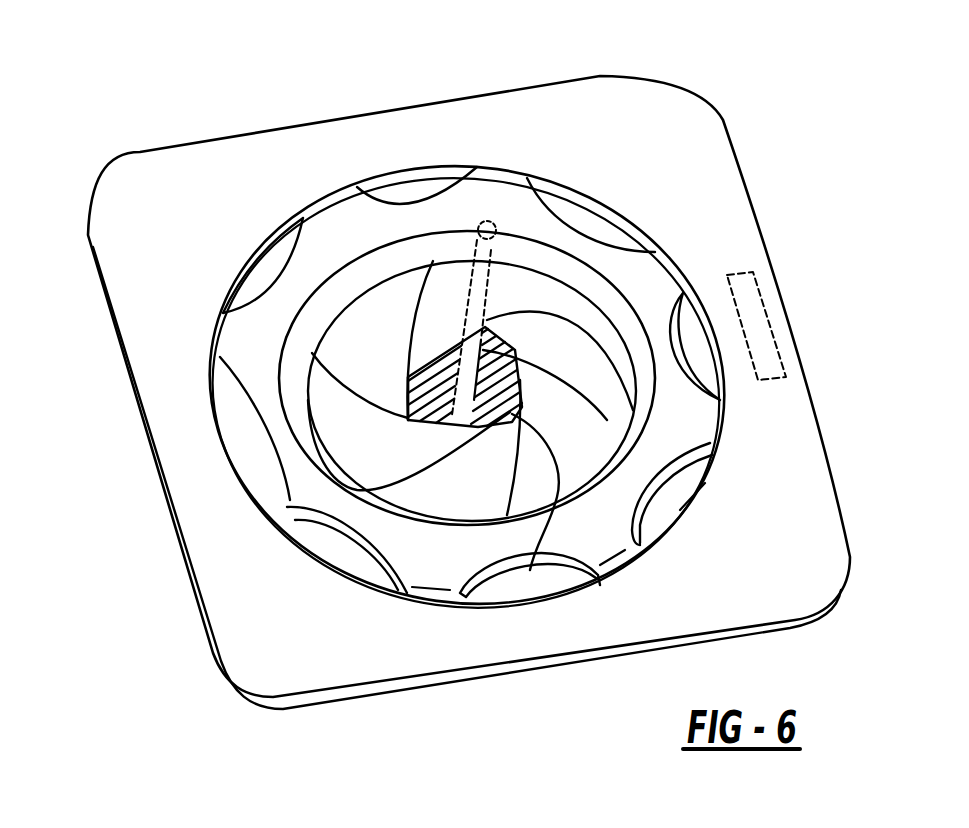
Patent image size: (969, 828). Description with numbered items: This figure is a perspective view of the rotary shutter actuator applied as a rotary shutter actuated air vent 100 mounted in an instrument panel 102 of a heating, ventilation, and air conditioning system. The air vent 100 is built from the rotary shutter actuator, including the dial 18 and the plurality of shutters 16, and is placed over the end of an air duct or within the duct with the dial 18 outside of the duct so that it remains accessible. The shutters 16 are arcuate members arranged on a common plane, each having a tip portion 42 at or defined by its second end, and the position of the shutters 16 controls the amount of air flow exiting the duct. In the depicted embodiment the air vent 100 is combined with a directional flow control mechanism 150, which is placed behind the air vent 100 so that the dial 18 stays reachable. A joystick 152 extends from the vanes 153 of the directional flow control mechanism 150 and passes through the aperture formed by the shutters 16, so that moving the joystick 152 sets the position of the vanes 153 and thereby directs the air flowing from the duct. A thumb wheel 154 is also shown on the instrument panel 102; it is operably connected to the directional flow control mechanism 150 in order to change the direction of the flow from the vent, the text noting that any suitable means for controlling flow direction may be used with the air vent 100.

The rotary shutter actuated air vent 100 is at (431, 70).
The instrument panel 102 is at (183, 178).
The dial 18 is at (287, 482).
The shutters 16 is at (580, 346).
The tip portion 42 is at (530, 570).
The directional flow control mechanism 150 is at (410, 381).
The joystick 152 is at (496, 233).
The vanes 153 is at (514, 400).
The thumb wheel 154 is at (773, 333).